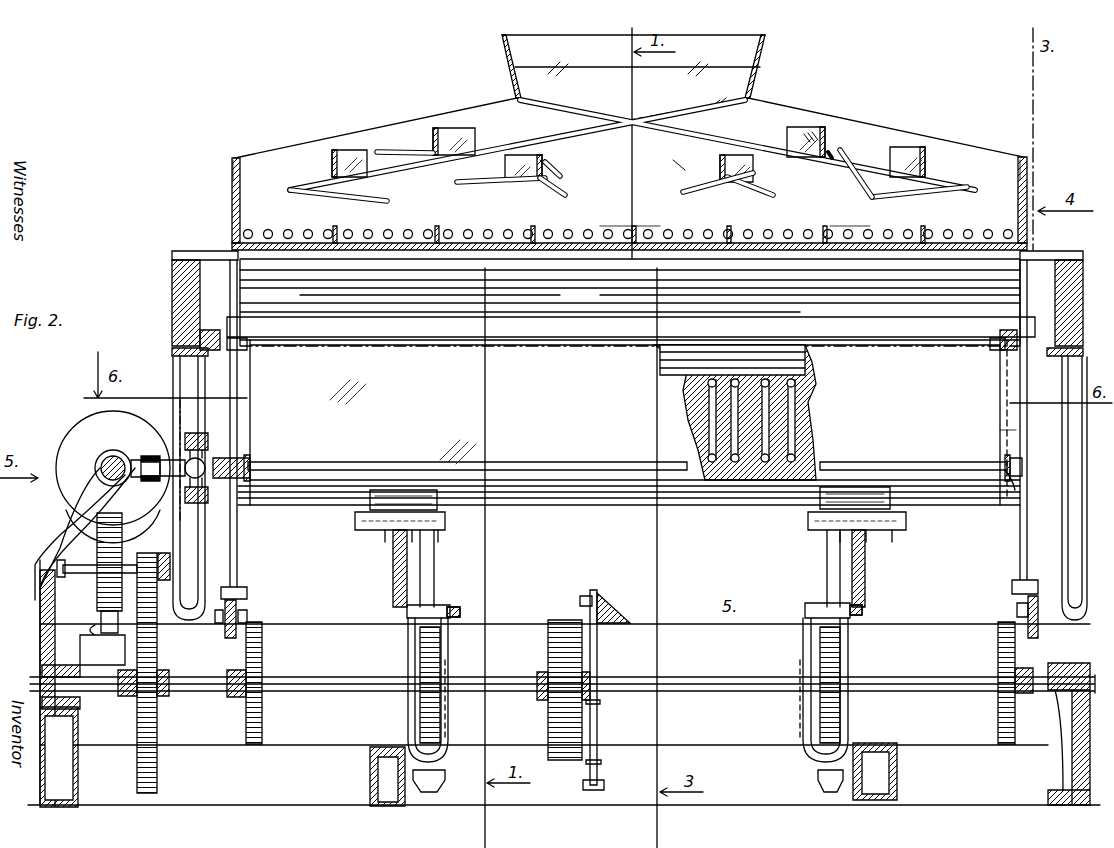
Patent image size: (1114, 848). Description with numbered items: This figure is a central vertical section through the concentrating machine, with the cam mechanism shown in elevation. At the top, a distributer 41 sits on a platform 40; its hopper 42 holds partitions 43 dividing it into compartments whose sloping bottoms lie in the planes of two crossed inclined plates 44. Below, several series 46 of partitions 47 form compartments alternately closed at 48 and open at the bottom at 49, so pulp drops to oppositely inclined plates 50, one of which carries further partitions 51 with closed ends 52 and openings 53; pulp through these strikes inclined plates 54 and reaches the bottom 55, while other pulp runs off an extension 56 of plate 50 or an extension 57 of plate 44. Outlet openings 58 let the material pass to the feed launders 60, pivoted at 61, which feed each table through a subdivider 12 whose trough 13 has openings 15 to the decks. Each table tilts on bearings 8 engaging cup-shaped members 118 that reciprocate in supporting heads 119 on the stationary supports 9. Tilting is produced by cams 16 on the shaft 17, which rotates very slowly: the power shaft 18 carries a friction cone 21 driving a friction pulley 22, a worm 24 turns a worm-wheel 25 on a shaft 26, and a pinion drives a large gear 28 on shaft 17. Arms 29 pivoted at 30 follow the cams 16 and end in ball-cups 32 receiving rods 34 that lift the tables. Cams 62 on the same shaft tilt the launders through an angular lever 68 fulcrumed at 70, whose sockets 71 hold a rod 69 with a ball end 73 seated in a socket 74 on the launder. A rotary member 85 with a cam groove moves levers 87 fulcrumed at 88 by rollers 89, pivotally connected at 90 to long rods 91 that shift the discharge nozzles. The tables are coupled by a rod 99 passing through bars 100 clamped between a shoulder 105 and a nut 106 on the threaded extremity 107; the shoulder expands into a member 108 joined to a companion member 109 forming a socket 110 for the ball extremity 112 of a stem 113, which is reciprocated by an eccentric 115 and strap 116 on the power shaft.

The bearings 8 is at (438, 514).
The stationary supports 9 is at (390, 552).
The subdivider 12 is at (629, 425).
The trough 13 is at (808, 356).
The openings 15 is at (684, 422).
The cams 16 is at (438, 636).
The shaft 17 is at (335, 694).
The power shaft 18 is at (116, 482).
The friction cone 21 is at (82, 426).
The friction pulley 22 is at (132, 548).
The worm 24 is at (120, 599).
The worm-wheel 25 is at (45, 564).
The shaft 26 is at (83, 649).
The gear 28 is at (157, 760).
The arms 29 is at (390, 738).
The pivot 30 is at (465, 605).
The ball-cup 32 is at (443, 772).
The rod 34 is at (434, 582).
The platform 40 is at (226, 242).
The distributer 41 is at (376, 119).
The hopper 42 is at (648, 77).
The partitions 43 is at (510, 69).
The inclined plate 44 is at (374, 152).
The series of partitions 46 is at (885, 123).
The partitions 47 is at (814, 134).
The closed lower ends 48 is at (331, 160).
The bottom openings 49 is at (830, 164).
The inclined plates 50 is at (351, 194).
The partitions 51 is at (520, 165).
The closed lower ends 52 is at (554, 168).
The bottom openings 53 is at (543, 198).
The inclined plates 54 is at (458, 192).
The bottom 55 is at (734, 213).
The extension 56 is at (565, 194).
The extension 57 is at (276, 170).
The outlet openings 58 is at (288, 229).
The feed launders 60 is at (240, 274).
The pivot 61 is at (177, 360).
The cams 62 is at (260, 625).
The angular lever 68 is at (222, 657).
The rod 69 is at (240, 528).
The fulcrum 70 is at (240, 600).
The concave sockets 71 is at (220, 584).
The ball extremity 73 is at (995, 356).
The socket 74 is at (248, 352).
The rotary member 85 is at (557, 620).
The levers 87 is at (597, 648).
The fulcrum 88 is at (608, 592).
The roller 89 is at (597, 702).
The pivotal connection 90 is at (602, 782).
The rod 91 is at (580, 768).
The rod 99 is at (558, 456).
The bars 100 is at (248, 458).
The shoulder 105 is at (250, 460).
The nut 106 is at (1012, 492).
The threaded extremity 107 is at (1022, 469).
The member 108 is at (201, 460).
The companion member 109 is at (192, 435).
The socket 110 is at (202, 502).
The ball extremity 112 is at (174, 458).
The stem 113 is at (146, 450).
The eccentric 115 is at (120, 446).
The strap 116 is at (102, 452).
The cup-shaped members 118 is at (354, 522).
The supporting heads 119 is at (365, 530).